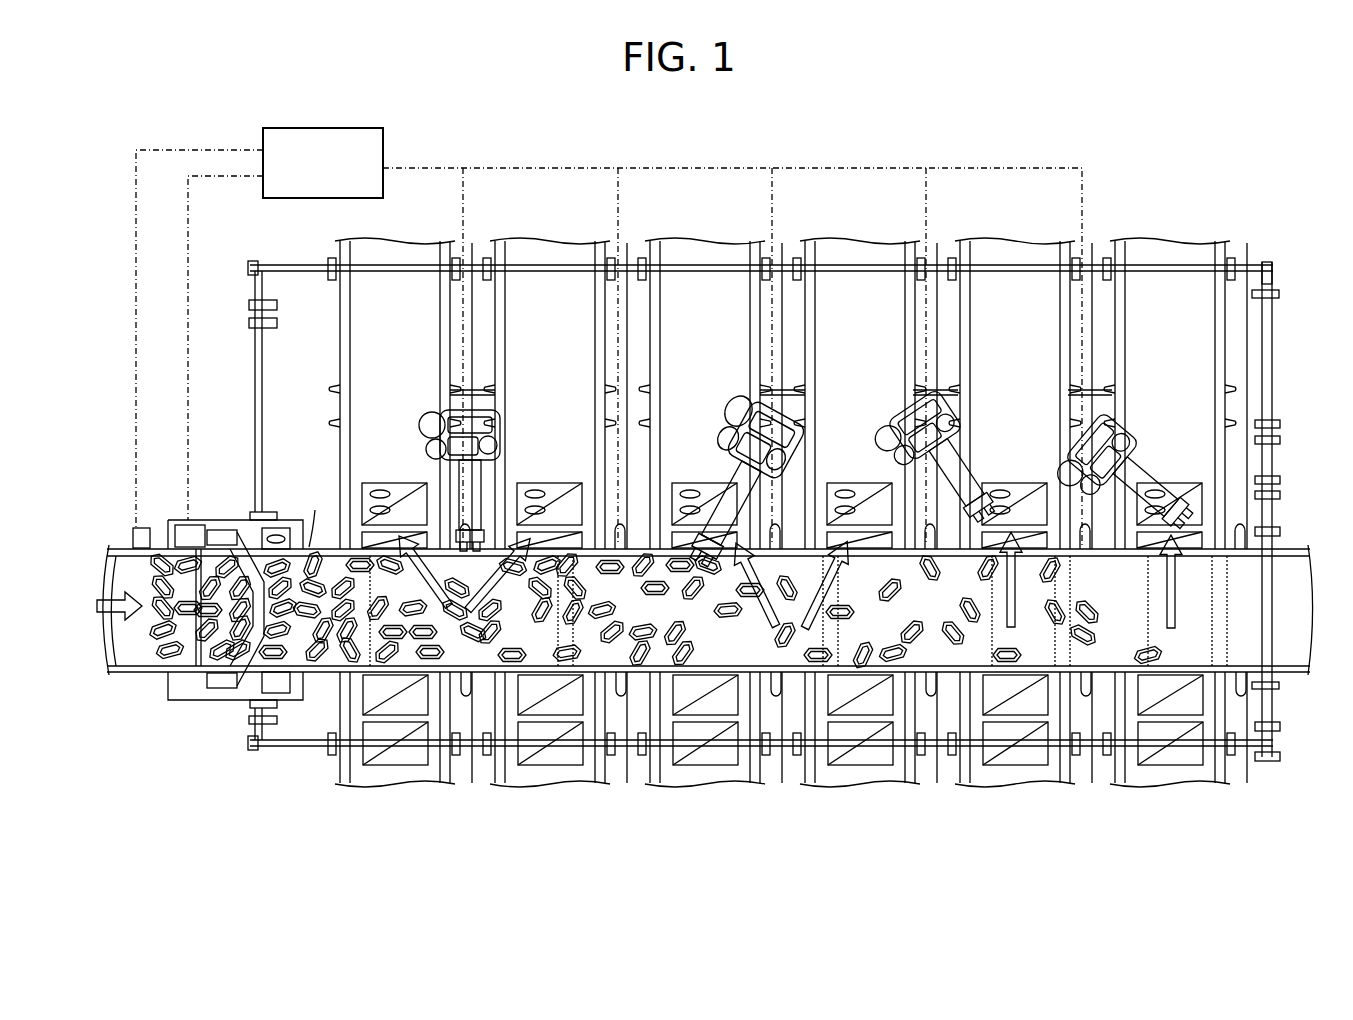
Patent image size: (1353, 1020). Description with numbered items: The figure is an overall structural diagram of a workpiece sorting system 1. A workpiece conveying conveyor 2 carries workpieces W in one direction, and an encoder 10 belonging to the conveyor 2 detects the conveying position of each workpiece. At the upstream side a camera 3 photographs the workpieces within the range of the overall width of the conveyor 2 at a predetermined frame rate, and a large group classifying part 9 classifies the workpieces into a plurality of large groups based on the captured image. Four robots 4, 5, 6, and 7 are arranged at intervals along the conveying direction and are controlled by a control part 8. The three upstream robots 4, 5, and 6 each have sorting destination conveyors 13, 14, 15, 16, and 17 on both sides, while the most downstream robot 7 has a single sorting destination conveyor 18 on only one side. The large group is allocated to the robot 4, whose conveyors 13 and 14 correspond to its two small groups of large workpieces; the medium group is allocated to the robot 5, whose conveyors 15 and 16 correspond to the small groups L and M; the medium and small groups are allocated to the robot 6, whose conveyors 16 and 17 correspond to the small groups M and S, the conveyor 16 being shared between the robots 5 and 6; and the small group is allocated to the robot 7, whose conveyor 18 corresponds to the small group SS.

The workpiece sorting system 1 is at (1160, 148).
The workpiece conveying conveyor 2 is at (126, 674).
The camera 3 is at (255, 542).
The robot 4 is at (425, 395).
The robot 5 is at (727, 410).
The robot 6 is at (893, 398).
The robot 7 is at (1067, 425).
The control part 8 is at (335, 128).
The large group classifying part 9 is at (182, 521).
The encoder 10 is at (132, 535).
The sorting destination conveyor 13 is at (341, 768).
The sorting destination conveyor 14 is at (495, 778).
The sorting destination conveyor 15 is at (649, 778).
The sorting destination conveyor 16 is at (804, 778).
The sorting destination conveyor 17 is at (959, 778).
The sorting destination conveyor 18 is at (1114, 778).